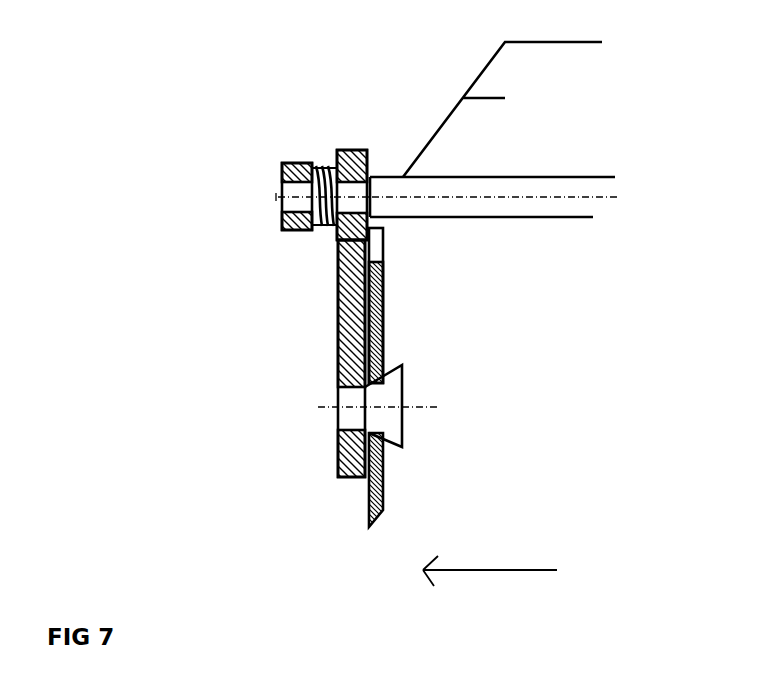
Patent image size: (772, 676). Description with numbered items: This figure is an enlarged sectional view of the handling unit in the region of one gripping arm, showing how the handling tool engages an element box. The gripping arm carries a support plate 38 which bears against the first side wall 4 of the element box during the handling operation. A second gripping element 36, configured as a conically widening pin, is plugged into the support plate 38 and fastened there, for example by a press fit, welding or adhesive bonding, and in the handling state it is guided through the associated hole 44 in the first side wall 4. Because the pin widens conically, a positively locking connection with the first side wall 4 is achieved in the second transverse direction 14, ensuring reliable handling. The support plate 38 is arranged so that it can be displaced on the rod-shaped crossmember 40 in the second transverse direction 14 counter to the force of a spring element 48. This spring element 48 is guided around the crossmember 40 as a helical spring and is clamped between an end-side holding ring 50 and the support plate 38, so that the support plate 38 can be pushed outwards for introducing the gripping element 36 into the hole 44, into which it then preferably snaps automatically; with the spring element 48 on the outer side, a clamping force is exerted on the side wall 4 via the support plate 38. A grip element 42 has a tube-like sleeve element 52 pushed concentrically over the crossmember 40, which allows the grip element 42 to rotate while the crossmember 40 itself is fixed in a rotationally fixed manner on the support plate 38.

The first side wall 4 is at (385, 306).
The second transverse direction 14 is at (487, 575).
The second gripping element 36 is at (350, 397).
The support plate 38 is at (346, 264).
The crossmember 40 is at (337, 150).
The grip element 42 is at (460, 97).
The hole 44 is at (388, 455).
The spring element 48 is at (335, 170).
The holding ring 50 is at (283, 172).
The sleeve element 52 is at (557, 215).